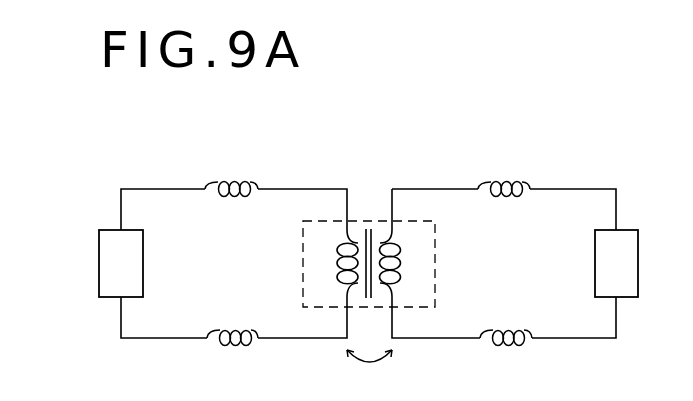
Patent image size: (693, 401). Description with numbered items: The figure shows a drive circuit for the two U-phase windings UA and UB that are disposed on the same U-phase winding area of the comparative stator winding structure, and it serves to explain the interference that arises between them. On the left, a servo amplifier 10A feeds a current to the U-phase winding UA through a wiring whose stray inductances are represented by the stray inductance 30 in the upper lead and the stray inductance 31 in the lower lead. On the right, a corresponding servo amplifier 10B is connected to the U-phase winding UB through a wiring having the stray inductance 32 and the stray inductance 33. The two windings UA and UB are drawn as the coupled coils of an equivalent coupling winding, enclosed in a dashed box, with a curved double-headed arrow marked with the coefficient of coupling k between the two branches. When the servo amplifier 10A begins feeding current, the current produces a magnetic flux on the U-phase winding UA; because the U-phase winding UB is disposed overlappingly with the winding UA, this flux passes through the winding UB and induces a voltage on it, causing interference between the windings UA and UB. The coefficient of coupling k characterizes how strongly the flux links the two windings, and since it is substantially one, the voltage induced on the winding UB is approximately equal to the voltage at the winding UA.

The servo amplifier 10A is at (143, 261).
The servo amplifier 10B is at (595, 268).
The stray inductance 30 is at (233, 182).
The stray inductance 31 is at (232, 346).
The stray inductance 32 is at (499, 182).
The stray inductance 33 is at (503, 346).
The U-phase winding UA is at (337, 262).
The U-phase winding UB is at (400, 263).
The coefficient of coupling k is at (369, 372).